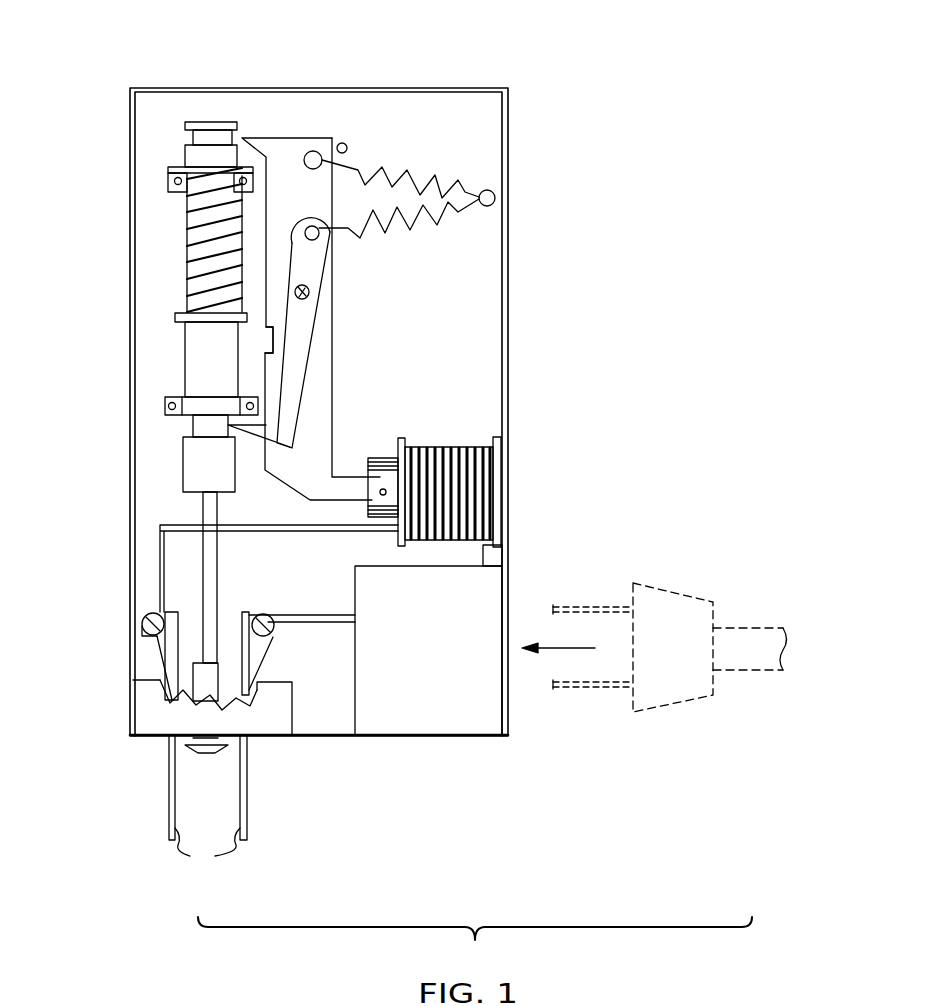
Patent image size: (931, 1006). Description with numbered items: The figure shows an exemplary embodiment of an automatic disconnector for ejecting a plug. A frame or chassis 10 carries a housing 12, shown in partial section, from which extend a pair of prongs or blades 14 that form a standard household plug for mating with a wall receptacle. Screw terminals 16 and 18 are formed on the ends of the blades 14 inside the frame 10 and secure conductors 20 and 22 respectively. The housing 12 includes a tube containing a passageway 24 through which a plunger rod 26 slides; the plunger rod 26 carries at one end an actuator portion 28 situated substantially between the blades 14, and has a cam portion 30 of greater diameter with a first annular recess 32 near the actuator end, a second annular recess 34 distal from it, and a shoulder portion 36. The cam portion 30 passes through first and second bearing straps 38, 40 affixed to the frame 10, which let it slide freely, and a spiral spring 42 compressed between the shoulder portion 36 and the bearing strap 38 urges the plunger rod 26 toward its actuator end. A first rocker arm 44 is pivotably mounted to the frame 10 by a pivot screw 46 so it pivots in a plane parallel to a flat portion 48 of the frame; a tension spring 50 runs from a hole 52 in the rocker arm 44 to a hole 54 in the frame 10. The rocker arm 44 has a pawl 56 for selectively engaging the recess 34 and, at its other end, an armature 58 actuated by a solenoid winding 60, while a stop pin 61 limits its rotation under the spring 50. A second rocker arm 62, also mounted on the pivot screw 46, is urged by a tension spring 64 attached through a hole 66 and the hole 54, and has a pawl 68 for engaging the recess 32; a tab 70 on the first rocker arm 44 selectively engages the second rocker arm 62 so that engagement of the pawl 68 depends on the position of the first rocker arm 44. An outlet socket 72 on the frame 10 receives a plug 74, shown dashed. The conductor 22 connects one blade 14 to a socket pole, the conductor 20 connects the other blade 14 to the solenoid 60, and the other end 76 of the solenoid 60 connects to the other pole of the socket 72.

The frame 10 is at (510, 270).
The housing 12 is at (268, 724).
The prongs or blades 14 is at (208, 814).
The screw terminal 16 is at (142, 622).
The screw terminal 18 is at (268, 612).
The conductor 20 is at (160, 570).
The conductor 22 is at (300, 625).
The movable contact 24 is at (170, 689).
The plunger rod 26 is at (217, 592).
The actuator portion 28 is at (200, 753).
The cam portion 30 is at (186, 354).
The first annular recess 32 is at (195, 428).
The second annular recess 34 is at (185, 138).
The shoulder portion 36 is at (178, 318).
The first bearing strap 38 is at (172, 180).
The second bearing strap 40 is at (168, 402).
The spiral spring 42 is at (186, 240).
The first rocker arm 44 is at (318, 365).
The pivot screw 46 is at (310, 292).
The flat portion 48 is at (433, 288).
The tension spring 50 is at (392, 167).
The hole 52 is at (310, 150).
The hole 54 is at (495, 193).
The pawl 56 is at (268, 140).
The armature 58 is at (380, 458).
The solenoid winding 60 is at (463, 494).
The stop pin 61 is at (343, 143).
The second rocker arm 62 is at (290, 382).
The tension spring 64 is at (408, 230).
The hole 66 is at (318, 240).
The pawl 68 is at (255, 435).
The tab 70 is at (283, 330).
The outlet socket 72 is at (420, 718).
The plug 74 is at (670, 692).
The other end of solenoid 76 is at (505, 560).